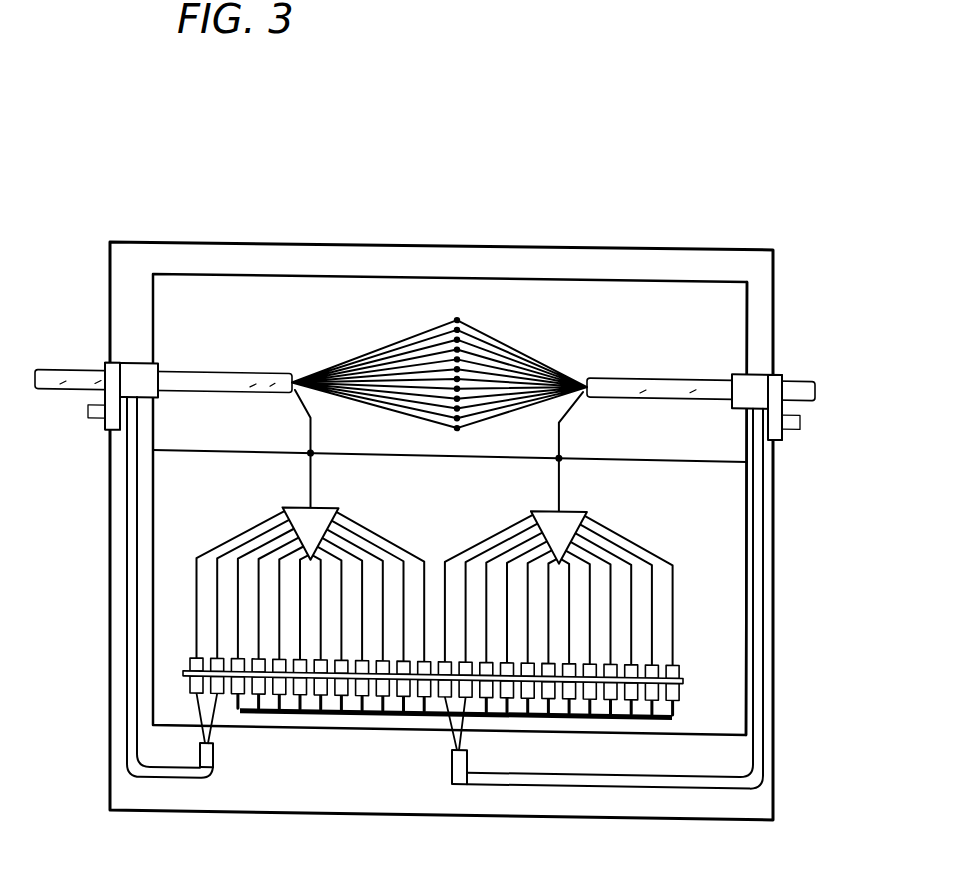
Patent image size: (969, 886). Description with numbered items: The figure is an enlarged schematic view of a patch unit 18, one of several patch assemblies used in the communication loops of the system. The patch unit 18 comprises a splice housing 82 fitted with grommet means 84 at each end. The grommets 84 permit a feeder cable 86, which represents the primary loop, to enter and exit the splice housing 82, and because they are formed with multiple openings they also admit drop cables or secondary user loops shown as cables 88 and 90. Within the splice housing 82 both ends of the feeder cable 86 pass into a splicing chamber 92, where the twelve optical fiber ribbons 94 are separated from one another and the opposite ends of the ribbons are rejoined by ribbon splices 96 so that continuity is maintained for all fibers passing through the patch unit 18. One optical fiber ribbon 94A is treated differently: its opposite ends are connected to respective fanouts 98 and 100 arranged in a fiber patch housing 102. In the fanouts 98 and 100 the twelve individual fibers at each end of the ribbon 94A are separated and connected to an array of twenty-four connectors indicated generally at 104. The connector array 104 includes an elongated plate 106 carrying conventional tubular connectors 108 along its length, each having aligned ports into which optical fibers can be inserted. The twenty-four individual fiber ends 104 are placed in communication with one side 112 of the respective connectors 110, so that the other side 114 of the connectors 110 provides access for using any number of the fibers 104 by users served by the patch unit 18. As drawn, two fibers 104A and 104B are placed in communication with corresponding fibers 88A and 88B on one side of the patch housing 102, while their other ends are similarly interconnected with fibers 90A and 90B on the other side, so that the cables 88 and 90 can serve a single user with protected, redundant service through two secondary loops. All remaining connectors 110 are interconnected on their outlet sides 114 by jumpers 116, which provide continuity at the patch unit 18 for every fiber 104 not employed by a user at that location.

The patch unit 18 is at (679, 232).
The splice housing 82 is at (306, 239).
The grommet means 84 is at (118, 361).
The feeder cable 86 is at (66, 388).
The cable 88 is at (131, 578).
The fiber 88A is at (195, 704).
The fiber 88B is at (213, 714).
The cable 90 is at (764, 531).
The fiber 90A is at (447, 734).
The fiber 90B is at (468, 726).
The splicing chamber 92 is at (412, 271).
The optical fiber ribbons 94 is at (531, 318).
The optical fiber ribbon 94A is at (309, 433).
The ribbon splices 96 is at (458, 372).
The fanout 98 is at (306, 515).
The fanout 100 is at (570, 511).
The fiber patch housing 102 is at (748, 486).
The connector array 104 is at (283, 527).
The fiber 104A is at (233, 529).
The fiber 104B is at (232, 538).
The elongated plate 106 is at (399, 715).
The tubular connectors 108 is at (183, 670).
The connectors 110 is at (279, 690).
The one side of the connectors 112 is at (690, 651).
The other side of the connectors 114 is at (686, 706).
The jumpers 116 is at (331, 705).